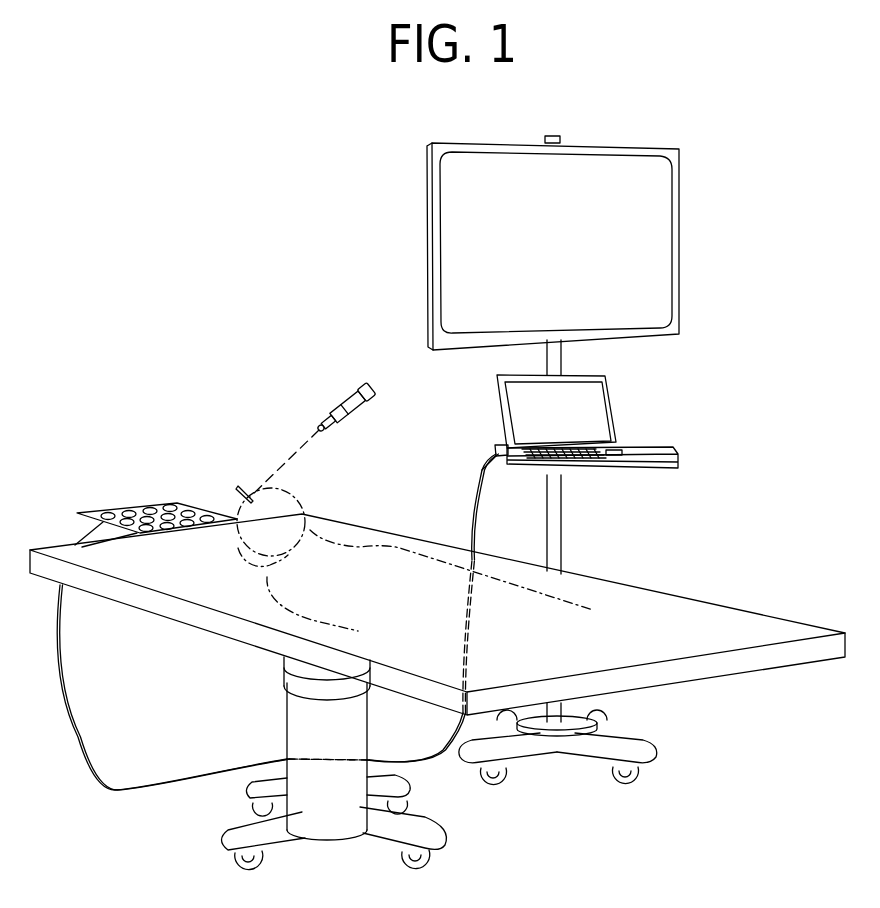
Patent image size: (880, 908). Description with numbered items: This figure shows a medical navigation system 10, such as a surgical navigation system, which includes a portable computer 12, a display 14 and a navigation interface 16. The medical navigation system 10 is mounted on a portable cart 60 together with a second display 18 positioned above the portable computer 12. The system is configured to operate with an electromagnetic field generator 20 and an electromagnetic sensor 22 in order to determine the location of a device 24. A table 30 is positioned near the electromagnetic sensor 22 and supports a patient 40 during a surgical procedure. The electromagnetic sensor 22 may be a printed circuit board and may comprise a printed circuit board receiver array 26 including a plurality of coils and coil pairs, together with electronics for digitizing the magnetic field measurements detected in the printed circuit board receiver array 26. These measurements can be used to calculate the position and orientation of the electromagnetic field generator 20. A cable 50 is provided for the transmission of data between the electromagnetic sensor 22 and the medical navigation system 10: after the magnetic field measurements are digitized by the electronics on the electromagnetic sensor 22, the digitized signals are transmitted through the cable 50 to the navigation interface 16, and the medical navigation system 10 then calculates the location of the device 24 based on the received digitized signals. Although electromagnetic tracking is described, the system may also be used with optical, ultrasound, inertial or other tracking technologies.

The medical navigation system 10 is at (668, 421).
The portable computer 12 is at (673, 450).
The display 14 is at (612, 408).
The navigation interface 16 is at (496, 446).
The second display 18 is at (679, 240).
The electromagnetic field generator 20 is at (360, 412).
The electromagnetic sensor 22 is at (140, 484).
The device 24 is at (343, 407).
The printed circuit board receiver array 26 is at (153, 503).
The table 30 is at (805, 622).
The patient 40 is at (423, 560).
The cable 50 is at (82, 765).
The portable cart 60 is at (562, 522).